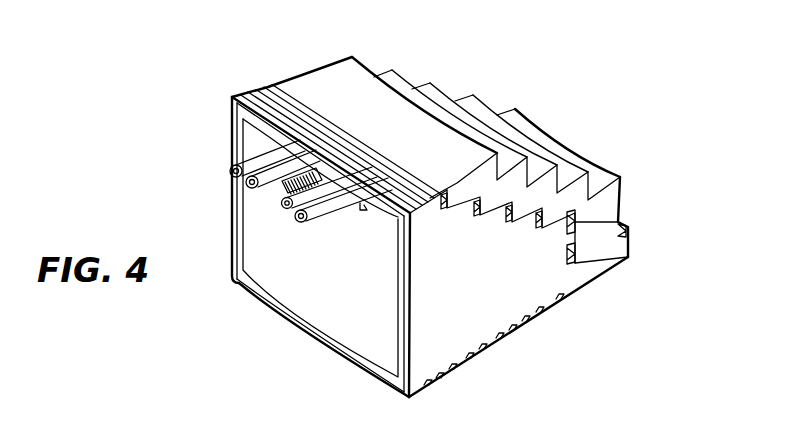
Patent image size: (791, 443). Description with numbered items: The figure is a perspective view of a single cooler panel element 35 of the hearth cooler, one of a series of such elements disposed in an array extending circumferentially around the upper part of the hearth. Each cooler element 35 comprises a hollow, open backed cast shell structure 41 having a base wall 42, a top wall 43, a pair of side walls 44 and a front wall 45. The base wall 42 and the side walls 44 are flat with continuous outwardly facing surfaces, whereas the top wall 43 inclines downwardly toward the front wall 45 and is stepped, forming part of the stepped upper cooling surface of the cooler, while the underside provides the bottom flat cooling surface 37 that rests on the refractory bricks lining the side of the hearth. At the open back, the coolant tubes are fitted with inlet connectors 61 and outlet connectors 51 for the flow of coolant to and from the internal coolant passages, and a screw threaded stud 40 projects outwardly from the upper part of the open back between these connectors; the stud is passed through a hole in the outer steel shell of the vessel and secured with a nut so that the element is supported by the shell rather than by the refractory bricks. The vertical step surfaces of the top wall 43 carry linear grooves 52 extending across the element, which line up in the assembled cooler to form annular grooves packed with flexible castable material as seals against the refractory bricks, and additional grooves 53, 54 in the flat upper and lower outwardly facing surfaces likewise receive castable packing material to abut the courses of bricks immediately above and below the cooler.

The cooler panel element 35 is at (585, 107).
The bottom flat cooling surface 37 is at (520, 324).
The screw threaded stud 40 is at (292, 165).
The cast shell structure 41 is at (300, 323).
The base wall 42 is at (303, 297).
The top wall 43 is at (388, 120).
The side walls 44 is at (263, 225).
The front wall 45 is at (577, 238).
The outlet connector 51 is at (284, 210).
The linear grooves 52 is at (507, 217).
The groove 53 is at (257, 95).
The groove 54 is at (450, 367).
The inlet connector 61 is at (246, 186).